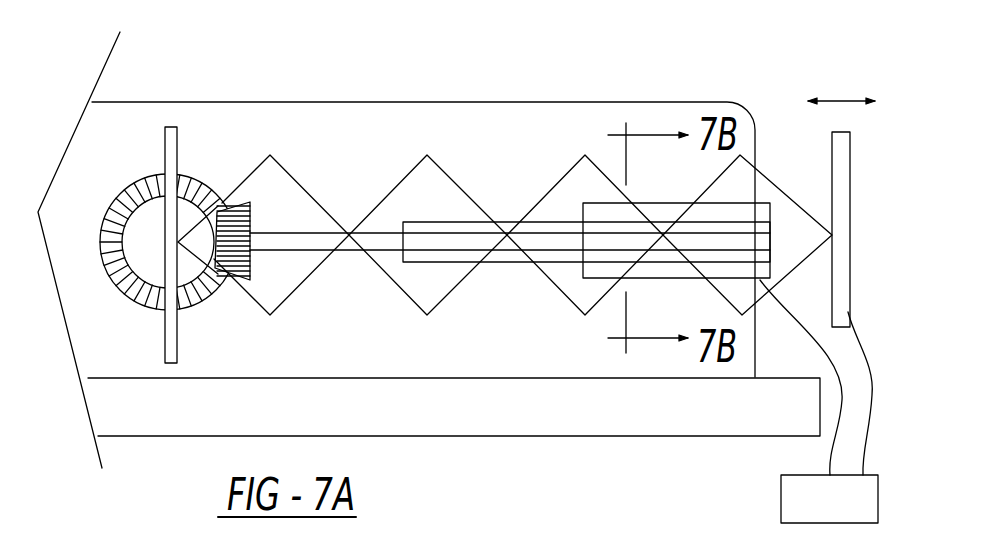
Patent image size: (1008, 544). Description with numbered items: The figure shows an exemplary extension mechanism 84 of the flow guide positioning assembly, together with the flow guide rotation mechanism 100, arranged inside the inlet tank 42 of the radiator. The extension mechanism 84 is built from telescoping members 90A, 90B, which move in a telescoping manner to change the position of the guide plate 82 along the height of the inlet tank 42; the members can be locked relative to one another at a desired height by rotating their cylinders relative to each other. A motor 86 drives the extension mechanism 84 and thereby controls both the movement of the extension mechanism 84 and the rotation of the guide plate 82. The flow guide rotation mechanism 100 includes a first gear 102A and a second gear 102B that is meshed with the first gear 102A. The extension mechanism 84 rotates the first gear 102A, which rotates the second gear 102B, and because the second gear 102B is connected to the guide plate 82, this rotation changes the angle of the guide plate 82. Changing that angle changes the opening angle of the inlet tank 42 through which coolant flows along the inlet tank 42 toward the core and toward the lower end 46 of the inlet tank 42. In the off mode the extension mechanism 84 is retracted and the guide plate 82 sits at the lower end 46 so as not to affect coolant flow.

The inlet tank 42 is at (132, 118).
The lower end 46 is at (755, 145).
The guide plate 82 is at (172, 135).
The extension mechanism 84 is at (523, 178).
The motor 86 is at (780, 492).
The telescoping member 90A is at (425, 222).
The telescoping member 90B is at (386, 196).
The flow guide rotation mechanism 100 is at (125, 328).
The first gear 102A is at (245, 204).
The second gear 102B is at (120, 197).